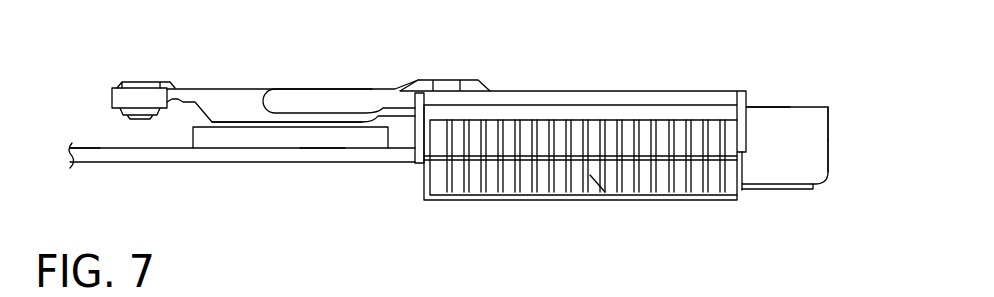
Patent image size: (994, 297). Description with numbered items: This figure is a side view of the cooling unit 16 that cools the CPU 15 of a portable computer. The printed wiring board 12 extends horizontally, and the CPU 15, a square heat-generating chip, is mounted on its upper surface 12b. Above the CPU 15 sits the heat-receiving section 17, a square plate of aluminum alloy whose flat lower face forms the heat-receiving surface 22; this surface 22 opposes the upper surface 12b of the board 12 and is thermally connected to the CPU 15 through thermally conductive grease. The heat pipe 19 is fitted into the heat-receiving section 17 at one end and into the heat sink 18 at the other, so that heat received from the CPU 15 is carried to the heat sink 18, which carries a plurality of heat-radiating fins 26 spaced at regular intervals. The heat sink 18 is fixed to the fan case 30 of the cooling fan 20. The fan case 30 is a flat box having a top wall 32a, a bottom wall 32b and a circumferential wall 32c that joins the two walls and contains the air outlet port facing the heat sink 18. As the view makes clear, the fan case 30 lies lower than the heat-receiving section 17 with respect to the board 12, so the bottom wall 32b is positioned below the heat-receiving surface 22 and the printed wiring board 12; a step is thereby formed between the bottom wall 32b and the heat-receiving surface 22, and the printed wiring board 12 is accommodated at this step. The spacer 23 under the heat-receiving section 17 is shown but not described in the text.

The printed wiring board 12 is at (110, 163).
The upper surface of printed wiring board 12b is at (100, 148).
The CPU 15 is at (322, 142).
The cooling unit 16 is at (647, 90).
The heat-receiving section 17 is at (198, 93).
The heat sink 18 is at (525, 113).
The heat pipe 19 is at (367, 88).
The cooling fan 20 is at (797, 102).
The heat-receiving surface 22 is at (238, 123).
The spacer 23 is at (253, 127).
The heat-radiating fins 26 is at (680, 173).
The fan case 30 is at (828, 160).
The top wall 32a is at (765, 107).
The bottom wall 32b is at (777, 192).
The circumferential wall 32c is at (828, 125).